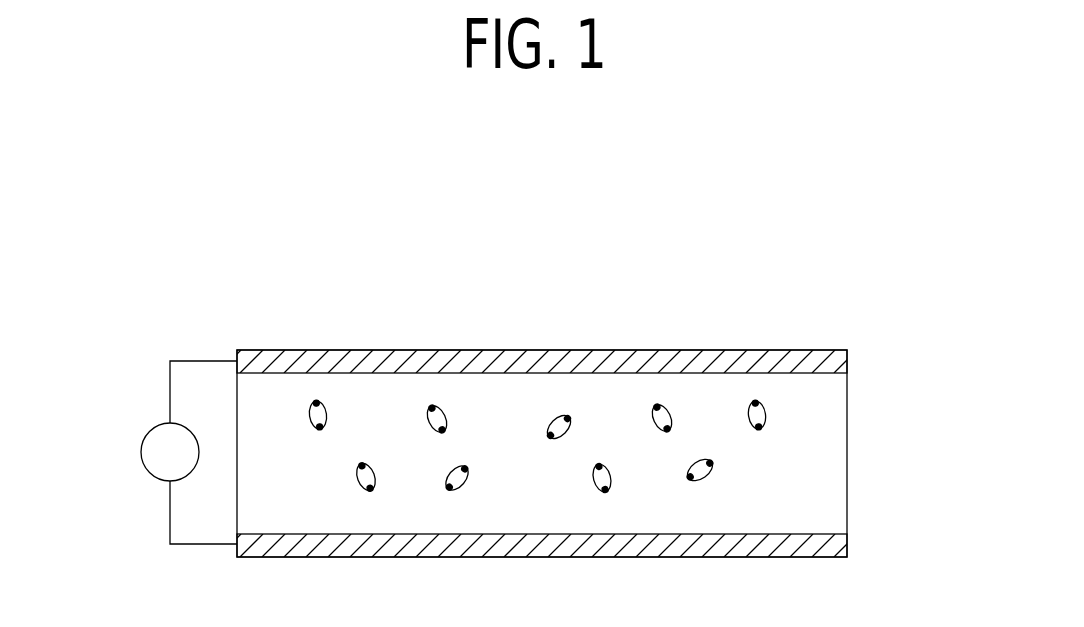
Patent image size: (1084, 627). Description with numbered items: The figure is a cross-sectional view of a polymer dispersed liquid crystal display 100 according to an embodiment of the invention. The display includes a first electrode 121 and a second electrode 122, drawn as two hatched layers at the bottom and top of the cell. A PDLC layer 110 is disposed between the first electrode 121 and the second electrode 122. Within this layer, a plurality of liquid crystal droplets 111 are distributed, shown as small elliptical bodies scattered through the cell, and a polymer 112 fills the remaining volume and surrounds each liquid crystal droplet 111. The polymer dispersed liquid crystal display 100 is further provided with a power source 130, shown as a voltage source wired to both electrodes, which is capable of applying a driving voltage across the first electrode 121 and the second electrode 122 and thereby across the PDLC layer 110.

The polymer dispersed liquid crystal display 100 is at (102, 283).
The PDLC layer 110 is at (830, 456).
The liquid crystal droplet 111 is at (370, 490).
The polymer 112 is at (433, 505).
The first electrode 121 is at (828, 550).
The second electrode 122 is at (828, 365).
The power source 130 is at (141, 453).